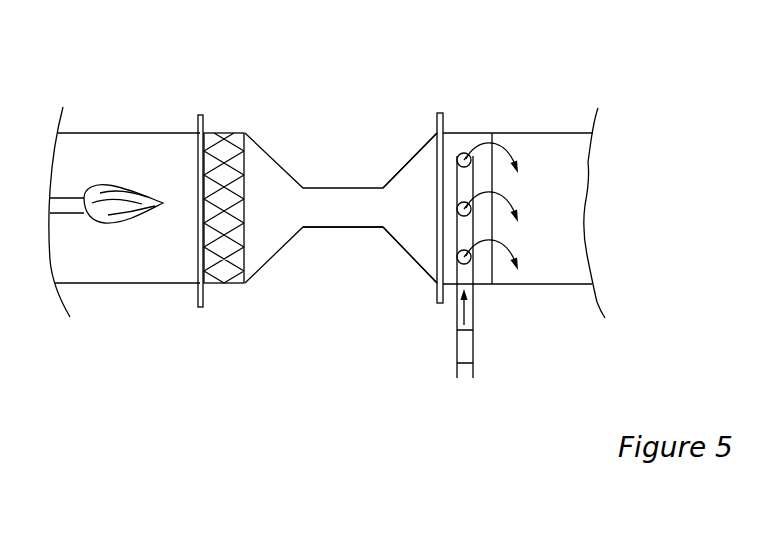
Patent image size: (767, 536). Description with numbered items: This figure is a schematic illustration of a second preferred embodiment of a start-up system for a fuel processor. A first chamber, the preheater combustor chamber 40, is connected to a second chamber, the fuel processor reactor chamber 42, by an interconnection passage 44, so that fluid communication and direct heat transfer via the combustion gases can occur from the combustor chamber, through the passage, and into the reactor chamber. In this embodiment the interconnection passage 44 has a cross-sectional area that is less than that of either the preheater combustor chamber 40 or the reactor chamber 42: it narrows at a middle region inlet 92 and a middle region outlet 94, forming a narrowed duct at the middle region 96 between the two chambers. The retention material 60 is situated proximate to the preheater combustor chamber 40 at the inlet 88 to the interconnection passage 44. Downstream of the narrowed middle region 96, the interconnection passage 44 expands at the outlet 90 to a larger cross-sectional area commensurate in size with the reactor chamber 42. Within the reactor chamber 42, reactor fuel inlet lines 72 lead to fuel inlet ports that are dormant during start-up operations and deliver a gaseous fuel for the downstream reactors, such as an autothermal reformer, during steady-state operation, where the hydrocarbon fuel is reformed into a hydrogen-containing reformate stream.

The preheater combustor chamber 40 is at (119, 117).
The fuel processor reactor chamber 42 is at (535, 114).
The interconnection passage 44 is at (273, 135).
The retention material 60 is at (226, 132).
The reactor fuel inlet lines 72 is at (460, 383).
The inlet of the interconnection passage 88 is at (199, 308).
The outlet of the interconnection passage 90 is at (440, 304).
The middle region inlet 92 is at (303, 229).
The middle region outlet 94 is at (383, 229).
The middle region 96 is at (375, 130).